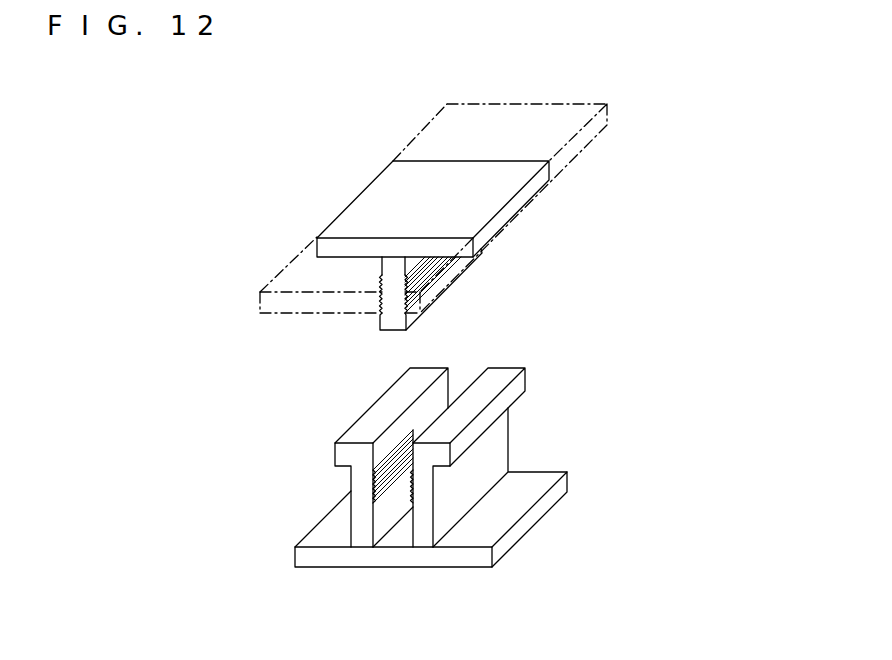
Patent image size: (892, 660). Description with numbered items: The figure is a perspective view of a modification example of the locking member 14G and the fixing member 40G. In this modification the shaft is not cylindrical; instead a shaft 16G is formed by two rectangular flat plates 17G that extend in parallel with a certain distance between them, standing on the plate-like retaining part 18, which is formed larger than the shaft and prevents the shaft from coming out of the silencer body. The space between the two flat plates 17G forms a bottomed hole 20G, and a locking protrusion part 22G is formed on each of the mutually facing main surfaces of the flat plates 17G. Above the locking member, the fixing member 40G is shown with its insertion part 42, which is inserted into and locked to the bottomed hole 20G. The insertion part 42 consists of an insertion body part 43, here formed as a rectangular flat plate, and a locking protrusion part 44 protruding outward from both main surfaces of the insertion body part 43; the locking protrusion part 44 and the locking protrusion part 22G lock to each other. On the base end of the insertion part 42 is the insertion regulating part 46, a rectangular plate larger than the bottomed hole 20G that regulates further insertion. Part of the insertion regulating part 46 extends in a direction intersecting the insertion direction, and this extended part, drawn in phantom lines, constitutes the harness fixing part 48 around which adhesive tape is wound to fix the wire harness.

The fixing member 40G is at (448, 235).
The insertion regulating part 46 is at (526, 195).
The insertion part 42 is at (458, 299).
The locking protrusion part 44 is at (416, 297).
The insertion body part 43 is at (396, 325).
The harness fixing part 48 is at (288, 263).
The locking member 14G is at (393, 496).
The retaining part 18 is at (330, 558).
The shaft 16G is at (372, 457).
The flat plate 17G is at (358, 492).
The bottomed hole 20G is at (408, 532).
The locking protrusion part 22G is at (390, 455).